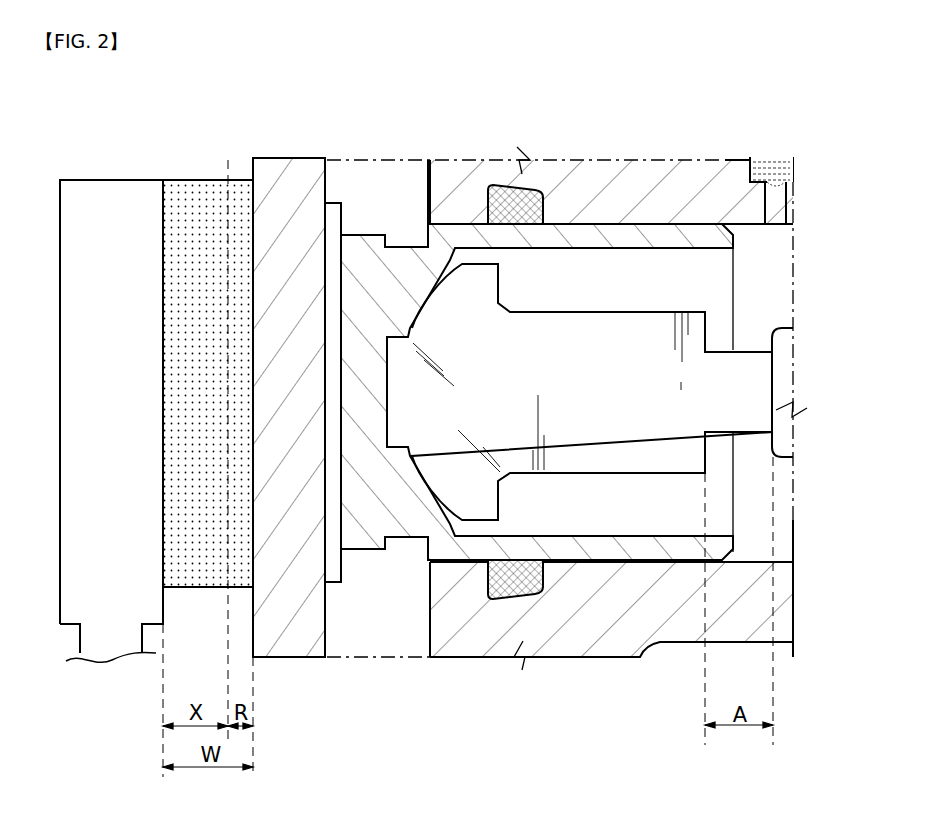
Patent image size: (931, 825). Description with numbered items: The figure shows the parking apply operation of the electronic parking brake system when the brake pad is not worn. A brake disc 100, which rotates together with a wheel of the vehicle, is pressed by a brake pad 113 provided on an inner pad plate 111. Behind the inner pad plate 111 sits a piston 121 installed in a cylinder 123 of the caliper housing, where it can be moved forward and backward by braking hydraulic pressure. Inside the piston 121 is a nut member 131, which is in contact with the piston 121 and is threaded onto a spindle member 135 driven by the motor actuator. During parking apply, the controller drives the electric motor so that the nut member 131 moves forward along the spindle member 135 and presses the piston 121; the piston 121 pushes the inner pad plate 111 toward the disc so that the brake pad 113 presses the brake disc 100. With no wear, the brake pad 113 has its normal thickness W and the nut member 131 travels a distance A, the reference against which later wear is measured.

The brake disc 100 is at (107, 188).
The brake pad 113 is at (197, 188).
The inner pad plate 111 is at (292, 172).
The piston 121 is at (363, 240).
The cylinder 123 is at (641, 170).
The nut member 131 is at (569, 313).
The spindle member 135 is at (782, 326).